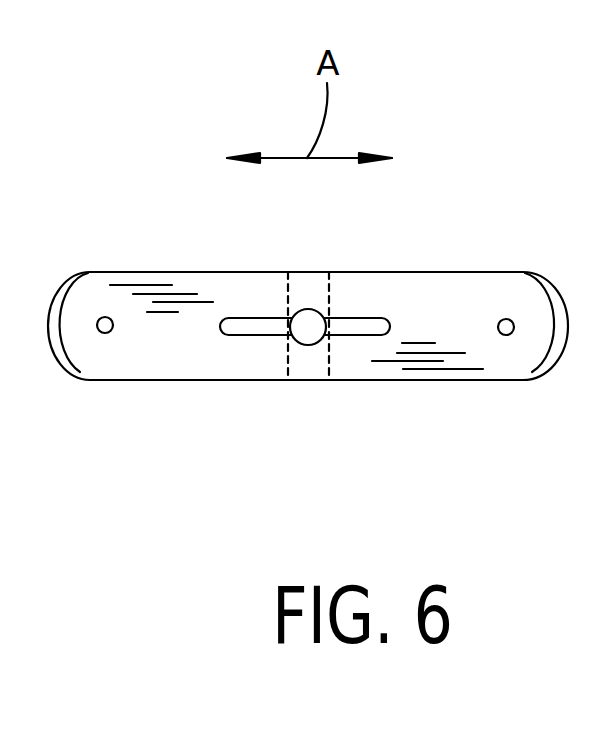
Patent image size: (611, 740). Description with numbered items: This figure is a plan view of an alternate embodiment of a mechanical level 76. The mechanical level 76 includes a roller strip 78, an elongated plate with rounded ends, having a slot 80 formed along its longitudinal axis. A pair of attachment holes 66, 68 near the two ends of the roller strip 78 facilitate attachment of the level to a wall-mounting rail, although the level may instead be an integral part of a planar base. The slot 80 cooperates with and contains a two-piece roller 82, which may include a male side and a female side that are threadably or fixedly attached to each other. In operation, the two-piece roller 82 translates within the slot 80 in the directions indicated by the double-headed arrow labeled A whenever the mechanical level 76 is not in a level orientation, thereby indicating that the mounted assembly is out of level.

The attachment hole 66 is at (105, 334).
The attachment hole 68 is at (506, 335).
The mechanical level 76 is at (500, 215).
The roller strip 78 is at (480, 292).
The slot 80 is at (257, 323).
The two-piece roller 82 is at (321, 314).